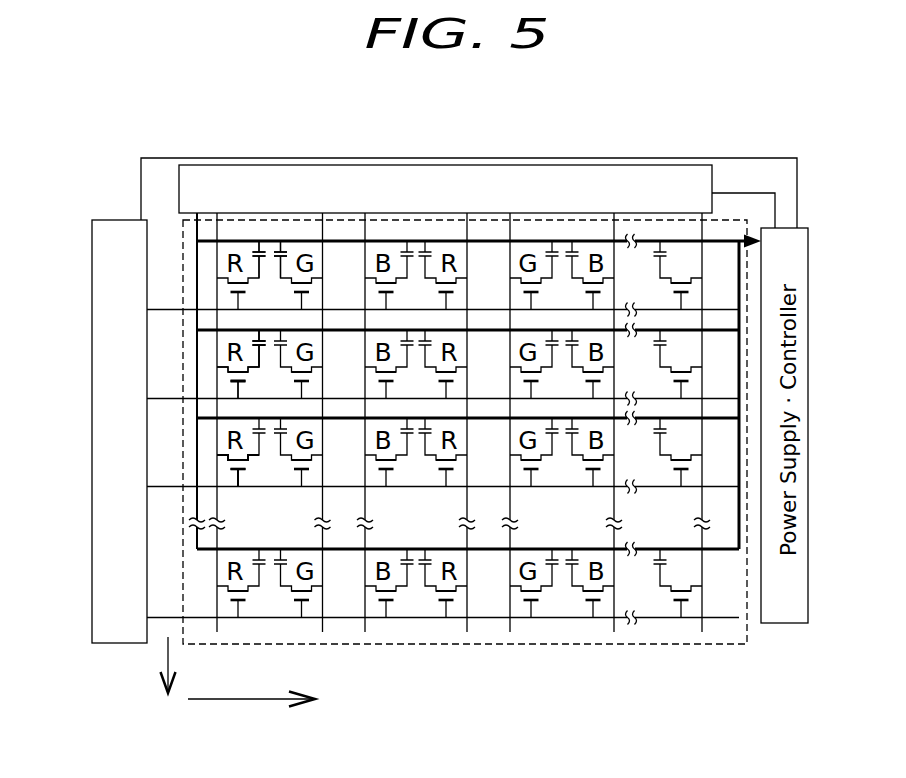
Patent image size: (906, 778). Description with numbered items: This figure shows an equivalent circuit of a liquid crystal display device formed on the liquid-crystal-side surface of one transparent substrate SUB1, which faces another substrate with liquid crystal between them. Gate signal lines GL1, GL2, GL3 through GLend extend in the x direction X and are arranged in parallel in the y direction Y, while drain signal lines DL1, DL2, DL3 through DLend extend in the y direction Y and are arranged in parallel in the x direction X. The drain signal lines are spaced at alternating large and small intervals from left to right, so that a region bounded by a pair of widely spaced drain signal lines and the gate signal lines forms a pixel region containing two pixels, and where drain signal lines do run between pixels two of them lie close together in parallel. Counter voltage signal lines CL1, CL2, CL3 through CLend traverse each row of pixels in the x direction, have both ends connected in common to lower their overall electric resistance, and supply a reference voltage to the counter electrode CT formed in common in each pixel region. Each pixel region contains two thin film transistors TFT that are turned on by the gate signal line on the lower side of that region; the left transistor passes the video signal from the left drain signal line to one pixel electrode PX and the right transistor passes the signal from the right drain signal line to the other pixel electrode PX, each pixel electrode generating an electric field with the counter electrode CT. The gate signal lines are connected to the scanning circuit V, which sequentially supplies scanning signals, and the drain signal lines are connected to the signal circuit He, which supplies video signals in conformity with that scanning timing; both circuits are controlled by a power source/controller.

The drain signal line DL1 is at (223, 412).
The drain signal line DL2 is at (323, 412).
The drain signal line DL3 is at (372, 412).
The drain signal line DLend is at (677, 412).
The gate signal line GL1 is at (443, 299).
The gate signal line GL2 is at (443, 388).
The gate signal line GL3 is at (443, 476).
The gate signal line GLend is at (443, 607).
The counter voltage signal line CL1 is at (479, 253).
The counter voltage signal line CL2 is at (468, 344).
The counter voltage signal line CL3 is at (468, 433).
The counter voltage signal line CLend is at (475, 564).
The signal circuit He is at (555, 167).
The scanning circuit V is at (100, 463).
The transparent substrate SUB1 is at (532, 646).
The counter electrode CT is at (258, 343).
The pixel electrode PX is at (236, 372).
The thin film transistor TFT is at (235, 484).
The x direction X is at (266, 699).
The y direction Y is at (182, 665).